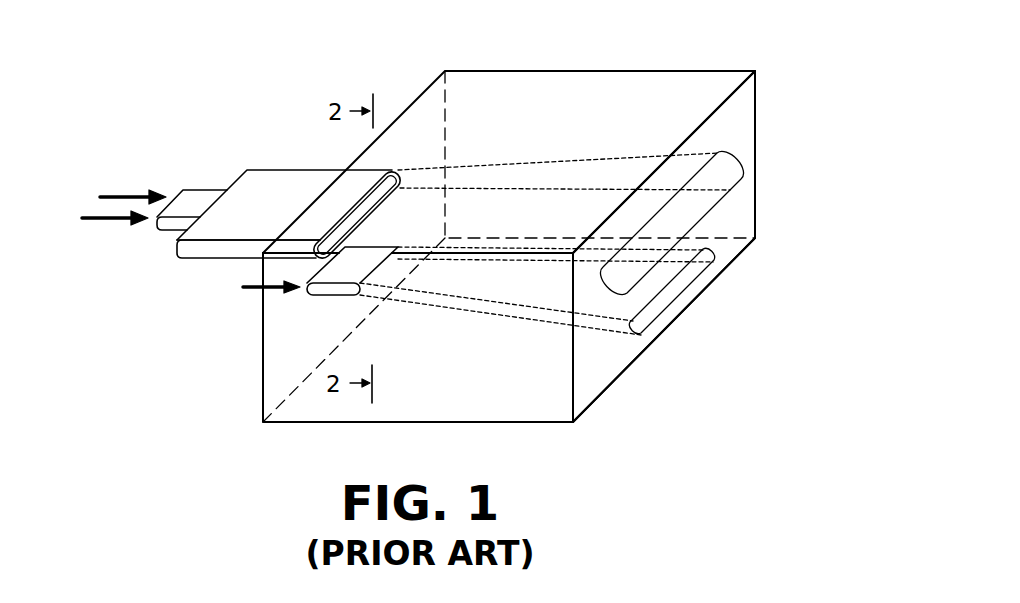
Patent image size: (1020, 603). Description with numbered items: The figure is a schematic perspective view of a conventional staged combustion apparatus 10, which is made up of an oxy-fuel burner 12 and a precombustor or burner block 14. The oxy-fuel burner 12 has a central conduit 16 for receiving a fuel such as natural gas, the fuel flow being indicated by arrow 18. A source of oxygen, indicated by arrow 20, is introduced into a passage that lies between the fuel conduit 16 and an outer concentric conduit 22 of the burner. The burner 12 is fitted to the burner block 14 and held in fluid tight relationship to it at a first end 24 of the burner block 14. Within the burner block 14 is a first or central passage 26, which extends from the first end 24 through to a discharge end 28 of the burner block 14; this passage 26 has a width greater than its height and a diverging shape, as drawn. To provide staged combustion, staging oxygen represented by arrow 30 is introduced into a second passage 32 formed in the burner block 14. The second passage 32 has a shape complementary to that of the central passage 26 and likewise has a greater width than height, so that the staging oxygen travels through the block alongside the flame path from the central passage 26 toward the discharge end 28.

The staged combustion apparatus 10 is at (638, 55).
The oxy-fuel burner 12 is at (241, 172).
The burner block 14 is at (408, 106).
The central conduit 16 is at (161, 230).
The arrow 18 is at (123, 196).
The arrow 20 is at (103, 222).
The outer concentric conduit 22 is at (169, 252).
The first end 24 is at (432, 83).
The central passage 26 is at (728, 186).
The discharge end 28 is at (593, 371).
The arrow 30 is at (248, 290).
The second passage 32 is at (681, 297).